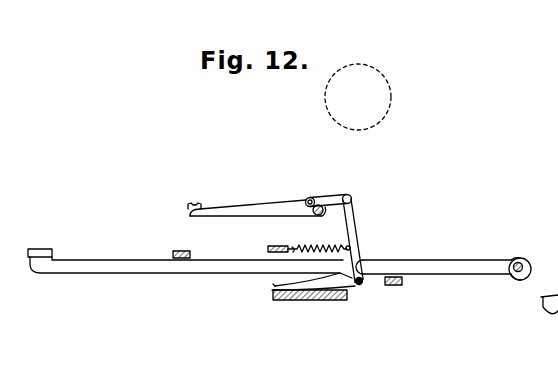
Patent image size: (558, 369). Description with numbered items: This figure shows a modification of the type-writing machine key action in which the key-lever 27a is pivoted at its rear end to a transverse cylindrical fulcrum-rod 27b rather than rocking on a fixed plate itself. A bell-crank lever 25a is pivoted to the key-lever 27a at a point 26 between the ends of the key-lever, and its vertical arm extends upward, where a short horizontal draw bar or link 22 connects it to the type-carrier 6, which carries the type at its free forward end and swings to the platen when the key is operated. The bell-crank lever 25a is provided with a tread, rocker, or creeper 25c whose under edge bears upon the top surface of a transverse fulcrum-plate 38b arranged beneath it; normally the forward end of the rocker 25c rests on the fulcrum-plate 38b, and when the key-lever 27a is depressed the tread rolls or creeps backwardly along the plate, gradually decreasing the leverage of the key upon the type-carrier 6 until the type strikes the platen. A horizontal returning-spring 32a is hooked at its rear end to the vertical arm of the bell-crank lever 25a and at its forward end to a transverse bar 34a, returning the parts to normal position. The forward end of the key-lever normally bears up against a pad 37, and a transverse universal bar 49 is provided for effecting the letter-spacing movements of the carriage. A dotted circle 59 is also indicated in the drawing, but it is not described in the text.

The cam wheel 59 is at (391, 98).
The draw bar or link 22 is at (333, 197).
The type-carrier 6 is at (257, 206).
The bell-crank lever 25a is at (356, 233).
The transverse bar 34a is at (279, 240).
The returning-spring 32a is at (322, 240).
The pad 37 is at (187, 247).
The key-lever 27a is at (185, 262).
The tread, rocker, or creeper 25c is at (298, 284).
The fulcrum-plate 38b is at (310, 304).
The pivot 26 is at (372, 290).
The universal bar 49 is at (398, 283).
The fulcrum-rod 27b is at (457, 285).